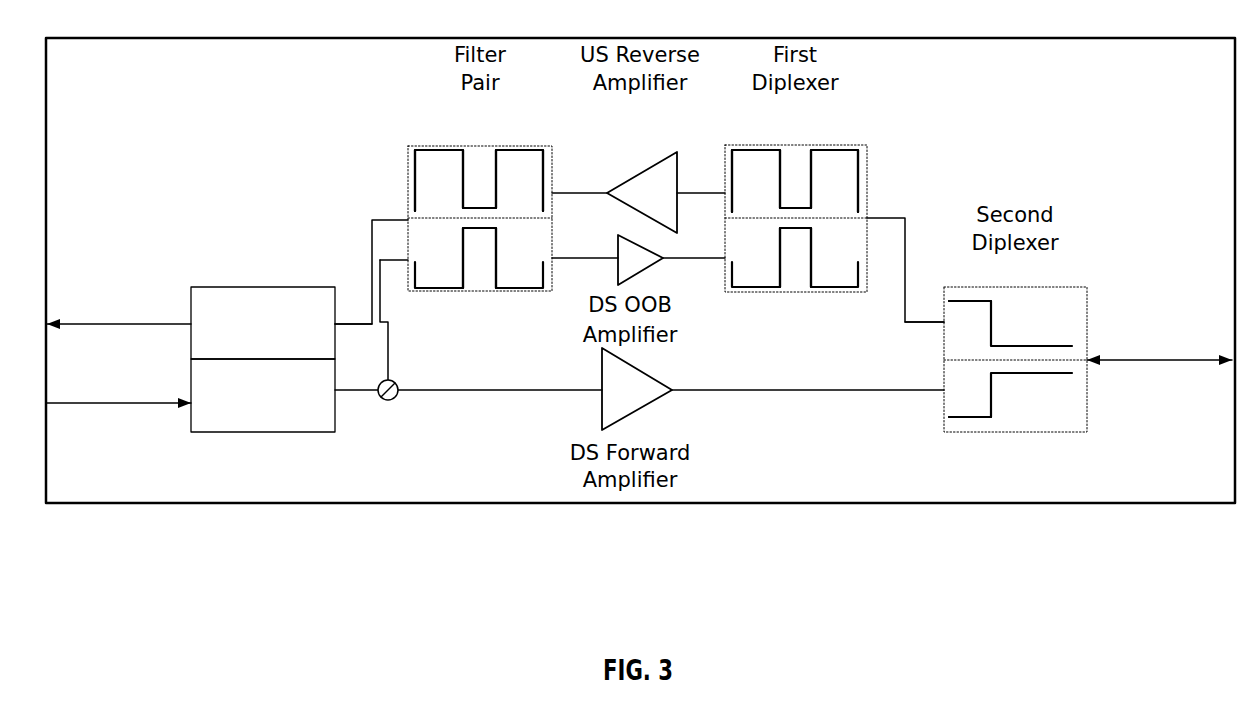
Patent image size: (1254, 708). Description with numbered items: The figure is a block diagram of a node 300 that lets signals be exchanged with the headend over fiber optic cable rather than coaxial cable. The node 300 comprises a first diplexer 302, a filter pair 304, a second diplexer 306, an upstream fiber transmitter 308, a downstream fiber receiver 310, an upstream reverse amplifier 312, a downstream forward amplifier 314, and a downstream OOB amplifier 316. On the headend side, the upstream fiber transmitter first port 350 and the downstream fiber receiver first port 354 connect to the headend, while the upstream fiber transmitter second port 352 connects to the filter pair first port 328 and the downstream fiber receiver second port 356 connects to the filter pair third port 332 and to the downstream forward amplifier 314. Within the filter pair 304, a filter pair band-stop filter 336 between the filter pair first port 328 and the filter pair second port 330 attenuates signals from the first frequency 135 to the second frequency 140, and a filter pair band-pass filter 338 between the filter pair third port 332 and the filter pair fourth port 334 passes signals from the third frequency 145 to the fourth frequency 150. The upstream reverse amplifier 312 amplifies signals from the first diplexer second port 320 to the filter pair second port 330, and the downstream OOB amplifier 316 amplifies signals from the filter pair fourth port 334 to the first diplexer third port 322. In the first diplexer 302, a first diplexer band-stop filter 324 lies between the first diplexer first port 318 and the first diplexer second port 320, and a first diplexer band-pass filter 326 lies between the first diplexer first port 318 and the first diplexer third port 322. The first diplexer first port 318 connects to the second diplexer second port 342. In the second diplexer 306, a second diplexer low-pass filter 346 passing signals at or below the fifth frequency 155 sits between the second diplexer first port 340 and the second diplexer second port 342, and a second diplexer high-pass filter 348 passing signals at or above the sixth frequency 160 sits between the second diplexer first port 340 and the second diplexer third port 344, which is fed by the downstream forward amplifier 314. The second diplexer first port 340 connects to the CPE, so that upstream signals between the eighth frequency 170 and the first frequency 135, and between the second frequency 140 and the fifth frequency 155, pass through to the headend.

The node 300 is at (1188, 38).
The first diplexer 302 is at (855, 145).
The filter pair 304 is at (412, 146).
The second diplexer 306 is at (1071, 287).
The upstream fiber transmitter 308 is at (218, 287).
The downstream fiber receiver 310 is at (230, 432).
The upstream reverse amplifier 312 is at (642, 192).
The downstream forward amplifier 314 is at (637, 389).
The downstream OOB amplifier 316 is at (618, 272).
The first diplexer first port 318 is at (870, 221).
The first diplexer second port 320 is at (725, 200).
The first diplexer third port 322 is at (725, 264).
The first diplexer band-stop filter 324 is at (792, 157).
The first diplexer band-pass filter 326 is at (790, 288).
The filter pair first port 328 is at (408, 215).
The filter pair second port 330 is at (552, 193).
The filter pair third port 332 is at (408, 242).
The filter pair fourth port 334 is at (552, 258).
The filter pair band-stop filter 336 is at (478, 151).
The filter pair band-pass filter 338 is at (485, 288).
The second diplexer first port 340 is at (1090, 364).
The second diplexer second port 342 is at (944, 326).
The second diplexer third port 344 is at (944, 393).
The second diplexer low-pass filter 346 is at (1080, 318).
The second diplexer high-pass filter 348 is at (1060, 424).
The upstream fiber transmitter first port 350 is at (191, 324).
The upstream fiber transmitter second port 352 is at (338, 328).
The downstream fiber receiver first port 354 is at (191, 405).
The downstream fiber receiver second port 356 is at (338, 394).
The first frequency 135 is at (463, 208).
The second frequency 140 is at (496, 208).
The third frequency 145 is at (463, 272).
The fourth frequency 150 is at (496, 272).
The fifth frequency 155 is at (552, 167).
The sixth frequency 160 is at (991, 394).
The eighth frequency 170 is at (412, 163).